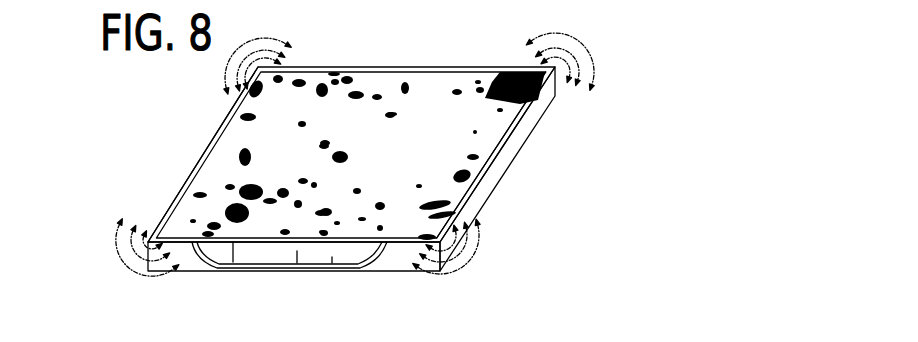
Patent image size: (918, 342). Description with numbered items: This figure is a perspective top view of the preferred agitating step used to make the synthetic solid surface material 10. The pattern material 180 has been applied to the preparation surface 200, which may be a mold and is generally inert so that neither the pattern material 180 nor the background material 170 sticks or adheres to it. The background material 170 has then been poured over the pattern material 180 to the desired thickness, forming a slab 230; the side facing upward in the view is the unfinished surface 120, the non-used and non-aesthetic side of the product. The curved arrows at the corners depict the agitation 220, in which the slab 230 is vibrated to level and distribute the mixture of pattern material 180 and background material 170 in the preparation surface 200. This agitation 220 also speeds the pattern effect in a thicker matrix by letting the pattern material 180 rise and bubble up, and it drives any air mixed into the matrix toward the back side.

The synthetic solid surface material 10 is at (447, 93).
The preparation surface 200 is at (413, 64).
The unfinished surface 120 is at (221, 160).
The pattern material 180 is at (527, 102).
The background material 170 is at (437, 142).
The agitation 220 is at (252, 46).
The slab 230 is at (380, 173).